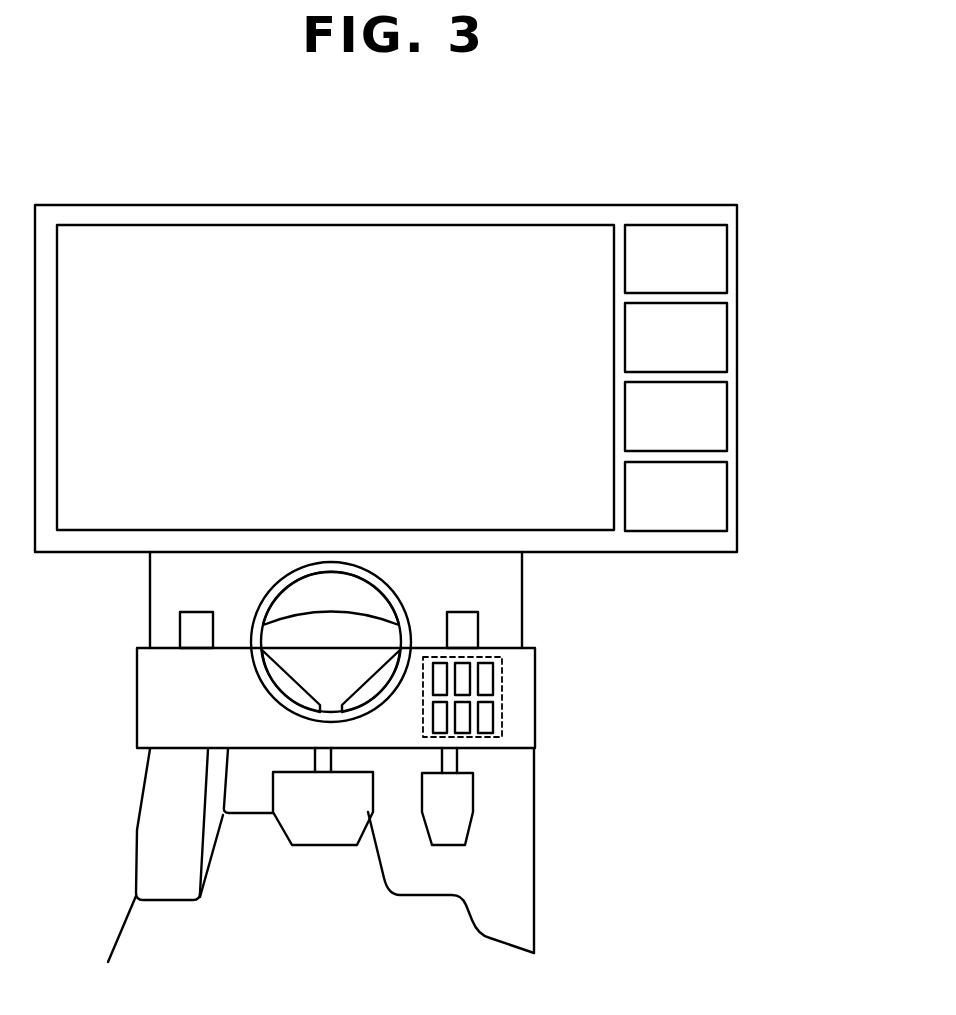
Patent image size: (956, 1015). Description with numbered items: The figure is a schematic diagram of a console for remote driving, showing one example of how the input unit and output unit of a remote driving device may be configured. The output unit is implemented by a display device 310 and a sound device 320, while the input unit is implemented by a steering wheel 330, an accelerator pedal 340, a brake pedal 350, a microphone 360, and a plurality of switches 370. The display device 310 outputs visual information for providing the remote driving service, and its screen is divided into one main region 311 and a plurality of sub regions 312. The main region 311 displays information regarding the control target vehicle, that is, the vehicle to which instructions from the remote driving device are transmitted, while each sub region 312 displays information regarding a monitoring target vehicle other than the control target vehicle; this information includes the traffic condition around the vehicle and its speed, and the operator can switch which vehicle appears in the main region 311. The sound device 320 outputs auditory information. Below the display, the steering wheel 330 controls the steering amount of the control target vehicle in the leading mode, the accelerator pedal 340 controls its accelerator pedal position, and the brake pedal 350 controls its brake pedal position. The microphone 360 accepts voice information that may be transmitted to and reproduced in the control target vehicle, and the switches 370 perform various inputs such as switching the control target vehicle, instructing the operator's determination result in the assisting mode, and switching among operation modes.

The display device 310 is at (395, 205).
The main region 311 is at (222, 225).
The sub region 312 is at (727, 265).
The sound device 320 is at (462, 630).
The steering wheel 330 is at (255, 667).
The accelerator pedal 340 is at (450, 823).
The brake pedal 350 is at (327, 815).
The microphone 360 is at (197, 632).
The switches 370 is at (502, 690).